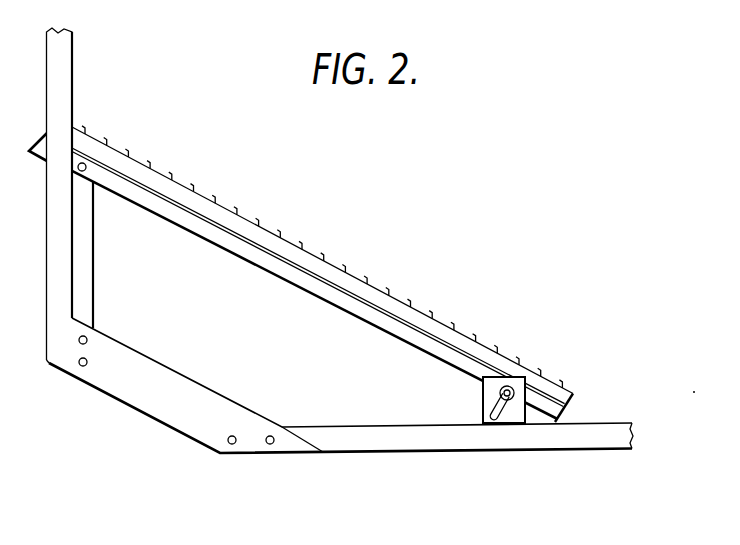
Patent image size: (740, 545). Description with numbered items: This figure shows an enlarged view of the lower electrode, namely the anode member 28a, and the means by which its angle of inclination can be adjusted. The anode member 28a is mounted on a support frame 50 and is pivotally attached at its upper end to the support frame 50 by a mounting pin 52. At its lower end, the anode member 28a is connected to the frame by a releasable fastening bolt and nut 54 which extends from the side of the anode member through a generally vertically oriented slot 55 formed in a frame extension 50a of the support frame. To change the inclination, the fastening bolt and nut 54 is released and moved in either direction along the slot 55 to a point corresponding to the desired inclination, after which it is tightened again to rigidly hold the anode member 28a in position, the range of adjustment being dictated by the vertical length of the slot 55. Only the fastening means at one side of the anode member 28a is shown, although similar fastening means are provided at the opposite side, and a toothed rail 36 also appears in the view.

The anode member 28a is at (300, 282).
The toothed rail 36 is at (330, 264).
The support frame 50 is at (384, 440).
The frame extension 50a is at (492, 397).
The mounting pin 52 is at (87, 165).
The fastening bolt and nut 54 is at (513, 388).
The slot 55 is at (498, 422).